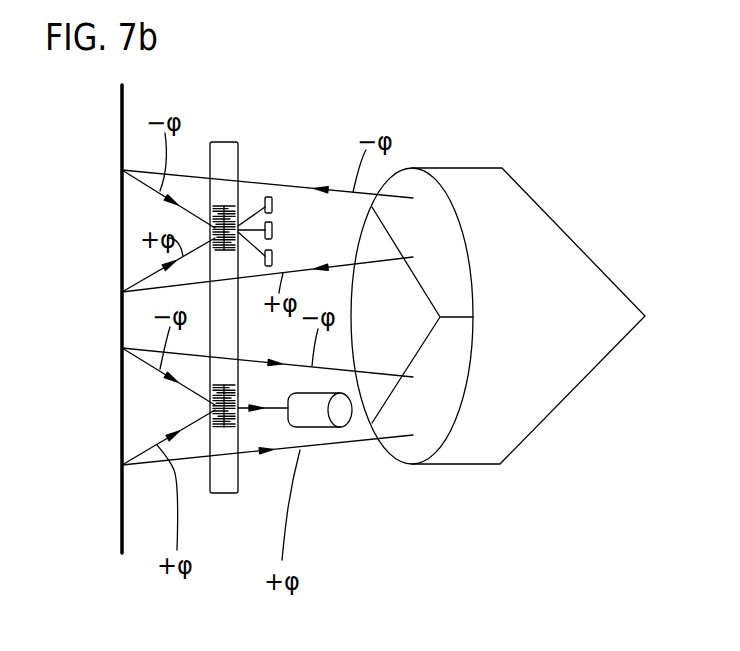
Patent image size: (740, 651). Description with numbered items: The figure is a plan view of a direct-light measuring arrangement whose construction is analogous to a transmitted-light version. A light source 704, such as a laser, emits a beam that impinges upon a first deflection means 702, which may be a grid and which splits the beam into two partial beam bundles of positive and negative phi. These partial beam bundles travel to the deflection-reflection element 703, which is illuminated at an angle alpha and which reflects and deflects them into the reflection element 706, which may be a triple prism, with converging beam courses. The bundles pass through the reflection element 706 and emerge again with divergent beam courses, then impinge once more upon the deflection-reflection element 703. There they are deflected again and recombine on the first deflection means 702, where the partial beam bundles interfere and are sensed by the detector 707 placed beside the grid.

The first deflection means 702 is at (228, 162).
The deflection-reflection element 703 is at (122, 519).
The light source 704 is at (323, 405).
The reflection element 706 is at (498, 316).
The detector 707 is at (272, 204).